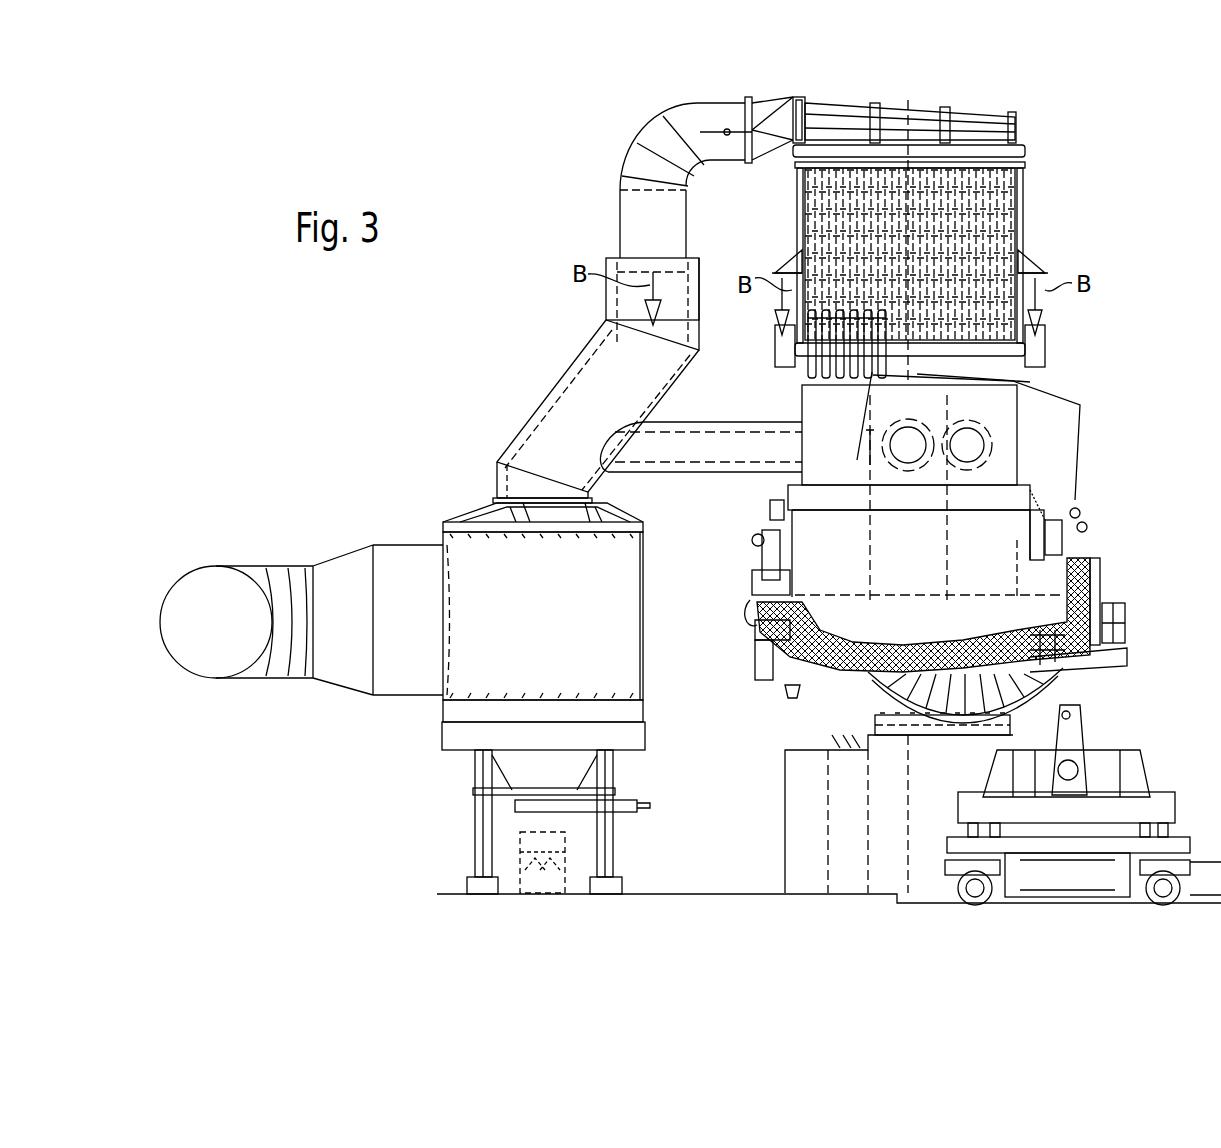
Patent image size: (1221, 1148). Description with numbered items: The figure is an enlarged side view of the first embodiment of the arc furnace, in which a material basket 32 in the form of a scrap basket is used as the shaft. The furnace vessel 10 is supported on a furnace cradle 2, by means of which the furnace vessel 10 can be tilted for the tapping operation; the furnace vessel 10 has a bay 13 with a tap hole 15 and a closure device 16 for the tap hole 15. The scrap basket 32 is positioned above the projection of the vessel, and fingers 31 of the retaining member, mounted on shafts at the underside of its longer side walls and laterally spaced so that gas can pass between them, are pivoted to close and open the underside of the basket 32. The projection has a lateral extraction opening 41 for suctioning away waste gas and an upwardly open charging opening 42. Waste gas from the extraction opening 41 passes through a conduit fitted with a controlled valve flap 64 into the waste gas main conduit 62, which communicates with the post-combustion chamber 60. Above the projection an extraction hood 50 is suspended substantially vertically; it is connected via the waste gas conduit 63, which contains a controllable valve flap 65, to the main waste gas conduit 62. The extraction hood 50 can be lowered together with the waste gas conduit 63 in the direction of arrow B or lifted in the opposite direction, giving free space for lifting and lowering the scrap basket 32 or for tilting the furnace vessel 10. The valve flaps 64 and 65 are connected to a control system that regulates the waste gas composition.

The furnace cradle 2 is at (830, 733).
The furnace vessel 10 is at (828, 680).
The bay 13 is at (1090, 570).
The tap hole 15 is at (1093, 632).
The closure device 16 is at (1062, 658).
The fingers 31 is at (810, 376).
The material basket 32 is at (1018, 170).
The extraction opening 41 is at (903, 452).
The charging opening 42 is at (1005, 385).
The extraction hood 50 is at (917, 102).
The post-combustion chamber 60 is at (560, 622).
The waste gas main conduit 62 is at (590, 388).
The waste gas conduit 63 is at (660, 138).
The controlled valve flap 64 is at (862, 437).
The controllable valve flap 65 is at (712, 132).